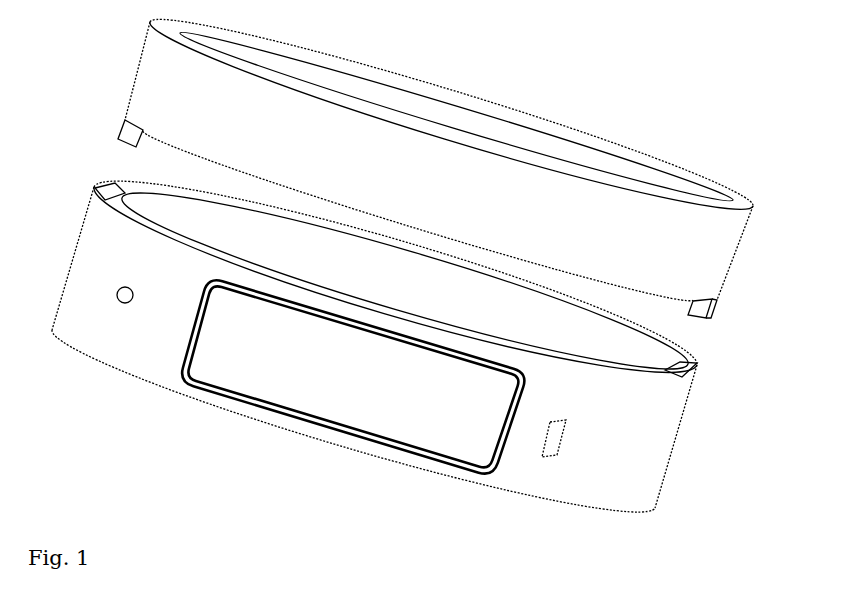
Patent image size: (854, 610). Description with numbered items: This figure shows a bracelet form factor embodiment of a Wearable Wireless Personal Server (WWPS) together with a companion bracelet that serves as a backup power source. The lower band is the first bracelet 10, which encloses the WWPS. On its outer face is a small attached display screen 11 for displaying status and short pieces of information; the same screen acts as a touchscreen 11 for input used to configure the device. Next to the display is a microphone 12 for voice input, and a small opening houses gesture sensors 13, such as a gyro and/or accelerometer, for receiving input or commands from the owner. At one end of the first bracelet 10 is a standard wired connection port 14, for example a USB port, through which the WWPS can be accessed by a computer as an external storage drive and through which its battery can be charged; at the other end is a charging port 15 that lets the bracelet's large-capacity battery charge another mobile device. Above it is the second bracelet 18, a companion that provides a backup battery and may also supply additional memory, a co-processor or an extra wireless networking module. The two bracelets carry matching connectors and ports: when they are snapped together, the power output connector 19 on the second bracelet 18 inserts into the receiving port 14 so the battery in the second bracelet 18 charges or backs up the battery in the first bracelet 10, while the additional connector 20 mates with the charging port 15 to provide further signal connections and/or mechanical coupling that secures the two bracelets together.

The first bracelet 10 is at (100, 367).
The display screen 11 is at (305, 403).
The microphone 12 is at (121, 283).
The gesture sensors 13 is at (572, 436).
The wired connection port 14 is at (97, 186).
The charging port 15 is at (699, 366).
The second bracelet 18 is at (460, 95).
The power output connector 19 is at (113, 127).
The additional connector 20 is at (722, 307).